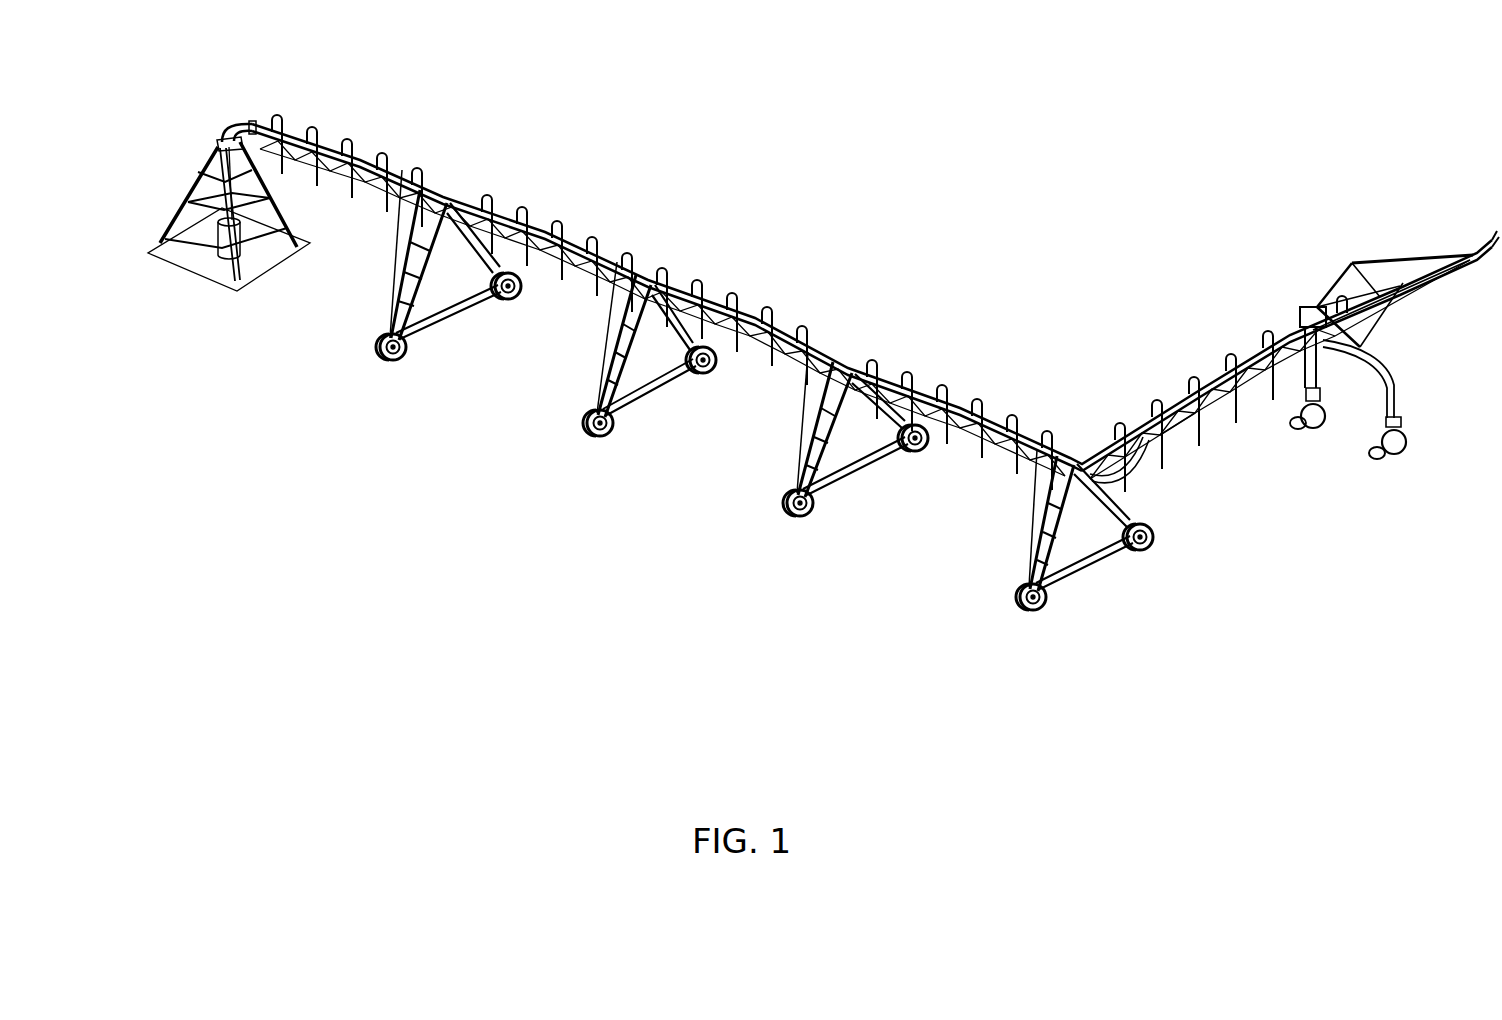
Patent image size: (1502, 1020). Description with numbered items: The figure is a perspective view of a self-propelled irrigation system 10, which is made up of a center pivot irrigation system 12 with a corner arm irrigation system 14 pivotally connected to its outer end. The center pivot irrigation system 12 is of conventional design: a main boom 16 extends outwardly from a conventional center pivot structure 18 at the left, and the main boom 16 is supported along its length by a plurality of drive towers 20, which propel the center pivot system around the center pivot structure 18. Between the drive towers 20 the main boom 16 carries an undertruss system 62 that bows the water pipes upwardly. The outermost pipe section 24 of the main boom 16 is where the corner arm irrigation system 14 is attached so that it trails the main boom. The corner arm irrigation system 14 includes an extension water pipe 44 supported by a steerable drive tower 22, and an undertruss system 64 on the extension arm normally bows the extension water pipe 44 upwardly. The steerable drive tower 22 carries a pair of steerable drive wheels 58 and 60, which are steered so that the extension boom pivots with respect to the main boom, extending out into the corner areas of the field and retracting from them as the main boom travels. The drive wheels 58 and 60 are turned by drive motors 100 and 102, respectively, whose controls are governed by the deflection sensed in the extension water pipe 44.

The self-propelled irrigation system 10 is at (930, 280).
The center pivot irrigation system 12 is at (702, 238).
The corner arm irrigation system 14 is at (1210, 328).
The main boom 16 is at (408, 159).
The center pivot structure 18 is at (293, 207).
The drive towers 20 is at (376, 286).
The steerable drive tower 22 is at (1377, 414).
The outermost pipe section 24 is at (1012, 420).
The extension water pipe 44 is at (1196, 448).
The steerable drive wheel 58 is at (1413, 447).
The steerable drive wheel 60 is at (1315, 430).
The undertruss system 62 is at (563, 277).
The undertruss system 64 is at (1208, 423).
The drive motor 100 is at (1390, 460).
The drive motor 102 is at (1320, 403).